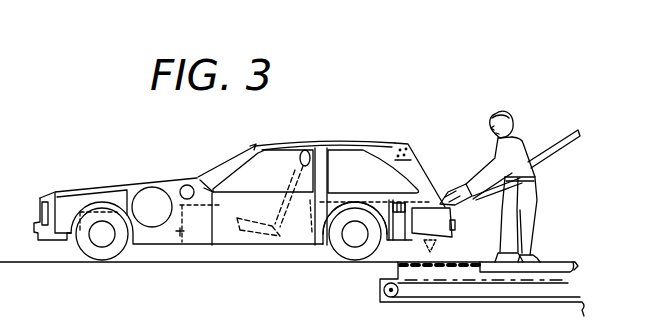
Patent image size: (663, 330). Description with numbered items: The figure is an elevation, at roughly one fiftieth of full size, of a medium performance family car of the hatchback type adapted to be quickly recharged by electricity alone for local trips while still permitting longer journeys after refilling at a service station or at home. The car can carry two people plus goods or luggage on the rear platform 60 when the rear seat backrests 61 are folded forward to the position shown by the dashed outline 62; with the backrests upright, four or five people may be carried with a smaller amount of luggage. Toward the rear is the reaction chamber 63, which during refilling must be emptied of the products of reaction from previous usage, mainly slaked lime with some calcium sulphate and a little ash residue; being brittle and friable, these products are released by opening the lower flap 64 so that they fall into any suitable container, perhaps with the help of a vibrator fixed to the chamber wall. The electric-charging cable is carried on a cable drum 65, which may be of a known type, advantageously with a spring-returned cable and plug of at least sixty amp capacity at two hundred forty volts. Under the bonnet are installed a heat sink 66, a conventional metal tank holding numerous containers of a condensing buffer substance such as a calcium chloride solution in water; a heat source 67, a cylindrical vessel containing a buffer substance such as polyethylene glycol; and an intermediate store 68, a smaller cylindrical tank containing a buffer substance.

The rear platform 60 is at (418, 202).
The rear seat backrests 61 is at (371, 184).
The dashed outline 62 is at (363, 173).
The reaction chamber 63 is at (427, 223).
The lower flap 64 is at (433, 245).
The cable drum 65 is at (391, 240).
The heat sink 66 is at (72, 202).
The heat source 67 is at (150, 196).
The intermediate store 68 is at (190, 199).